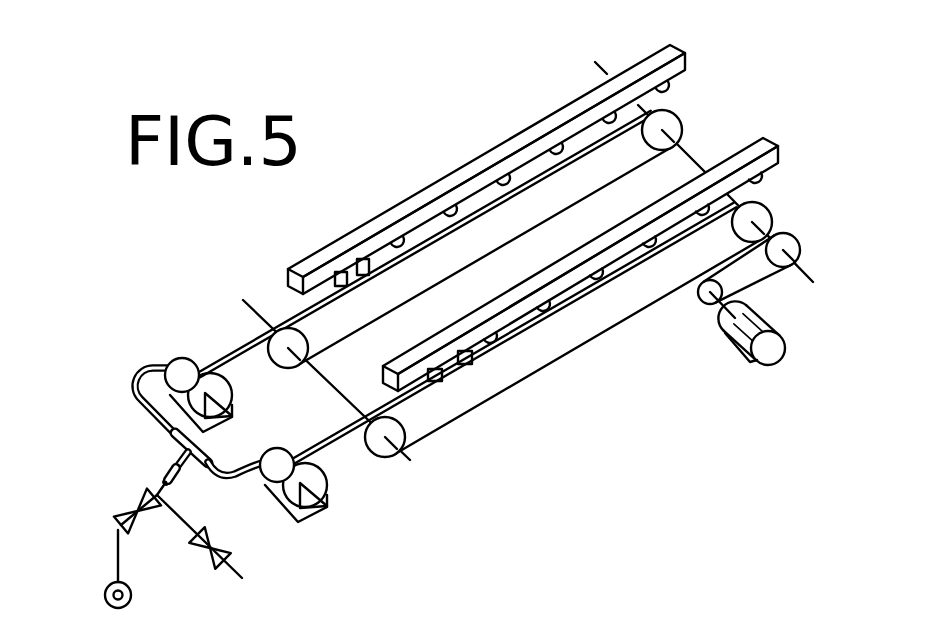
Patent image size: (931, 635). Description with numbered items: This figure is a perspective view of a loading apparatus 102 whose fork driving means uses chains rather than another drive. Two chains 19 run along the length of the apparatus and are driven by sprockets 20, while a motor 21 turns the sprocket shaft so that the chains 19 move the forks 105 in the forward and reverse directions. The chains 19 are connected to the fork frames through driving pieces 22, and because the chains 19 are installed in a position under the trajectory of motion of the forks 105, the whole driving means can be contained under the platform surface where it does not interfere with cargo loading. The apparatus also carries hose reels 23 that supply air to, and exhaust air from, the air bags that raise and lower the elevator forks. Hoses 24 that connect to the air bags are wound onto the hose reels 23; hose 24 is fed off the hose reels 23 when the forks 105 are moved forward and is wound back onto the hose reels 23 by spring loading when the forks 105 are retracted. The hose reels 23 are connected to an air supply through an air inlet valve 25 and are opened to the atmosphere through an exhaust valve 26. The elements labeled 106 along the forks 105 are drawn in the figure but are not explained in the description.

The chain 19 is at (328, 350).
The sprocket 20 is at (675, 118).
The motor 21 is at (779, 354).
The driving piece 22 is at (362, 258).
The hose reel 23 is at (178, 359).
The hose 24 is at (240, 347).
The air inlet valve 25 is at (118, 512).
The exhaust valve 26 is at (208, 564).
The loading apparatus 102 is at (255, 288).
The fork 105 is at (508, 146).
The nozzle 106 is at (557, 154).